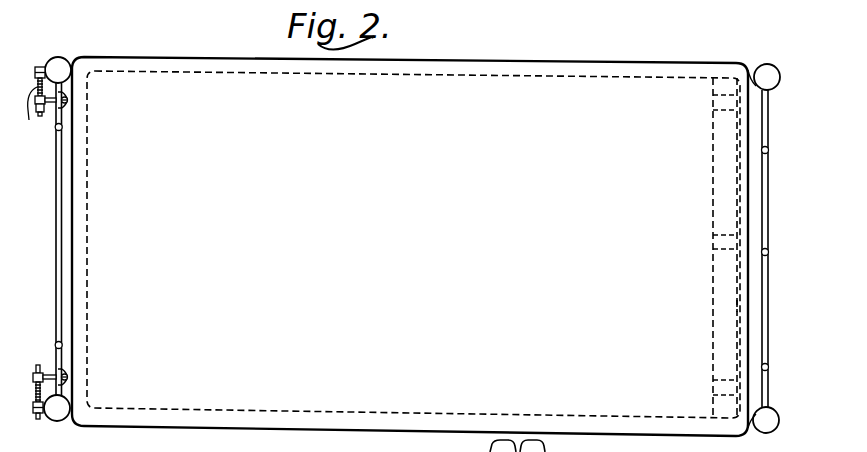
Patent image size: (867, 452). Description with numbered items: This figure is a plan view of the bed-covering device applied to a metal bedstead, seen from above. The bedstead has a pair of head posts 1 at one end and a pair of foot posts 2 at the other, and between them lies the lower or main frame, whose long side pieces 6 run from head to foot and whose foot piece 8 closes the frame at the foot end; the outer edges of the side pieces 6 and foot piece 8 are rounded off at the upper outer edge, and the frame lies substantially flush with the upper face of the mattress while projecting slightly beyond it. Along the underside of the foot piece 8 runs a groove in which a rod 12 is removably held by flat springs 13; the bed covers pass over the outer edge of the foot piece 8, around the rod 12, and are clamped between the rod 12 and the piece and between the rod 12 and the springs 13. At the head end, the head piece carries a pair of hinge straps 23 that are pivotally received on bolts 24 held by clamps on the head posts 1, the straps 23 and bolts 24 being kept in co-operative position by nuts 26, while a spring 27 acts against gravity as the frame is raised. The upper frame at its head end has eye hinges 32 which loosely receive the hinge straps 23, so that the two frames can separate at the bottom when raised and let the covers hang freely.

The head posts 1 is at (65, 60).
The foot posts 2 is at (767, 72).
The side pieces 6 is at (318, 66).
The foot piece 8 is at (708, 116).
The rod 12 is at (737, 303).
The flat springs 13 is at (720, 387).
The hinge straps 23 is at (70, 102).
The bolts 24 is at (43, 113).
The nuts 26 is at (41, 66).
The spring 27 is at (33, 112).
The eye hinges 32 is at (68, 99).